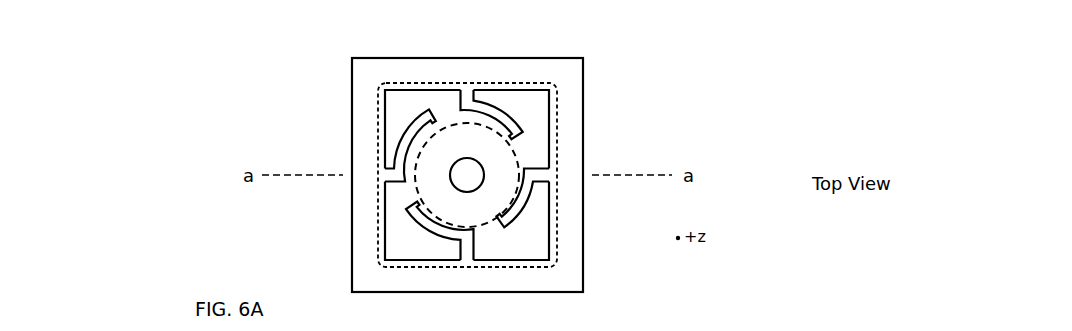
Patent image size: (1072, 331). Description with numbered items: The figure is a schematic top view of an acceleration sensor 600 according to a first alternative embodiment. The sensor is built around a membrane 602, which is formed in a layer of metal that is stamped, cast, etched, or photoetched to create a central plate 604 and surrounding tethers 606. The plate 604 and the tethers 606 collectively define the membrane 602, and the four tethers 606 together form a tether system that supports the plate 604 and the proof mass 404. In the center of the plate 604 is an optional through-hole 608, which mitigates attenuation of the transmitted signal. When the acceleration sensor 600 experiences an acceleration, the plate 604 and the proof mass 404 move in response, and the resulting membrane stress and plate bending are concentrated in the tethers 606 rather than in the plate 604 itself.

The acceleration sensor 600 is at (246, 67).
The membrane 602 is at (422, 175).
The proof mass 404 is at (521, 168).
The tethers 606 is at (402, 136).
The plate 604 is at (536, 197).
The through-hole 608 is at (553, 113).